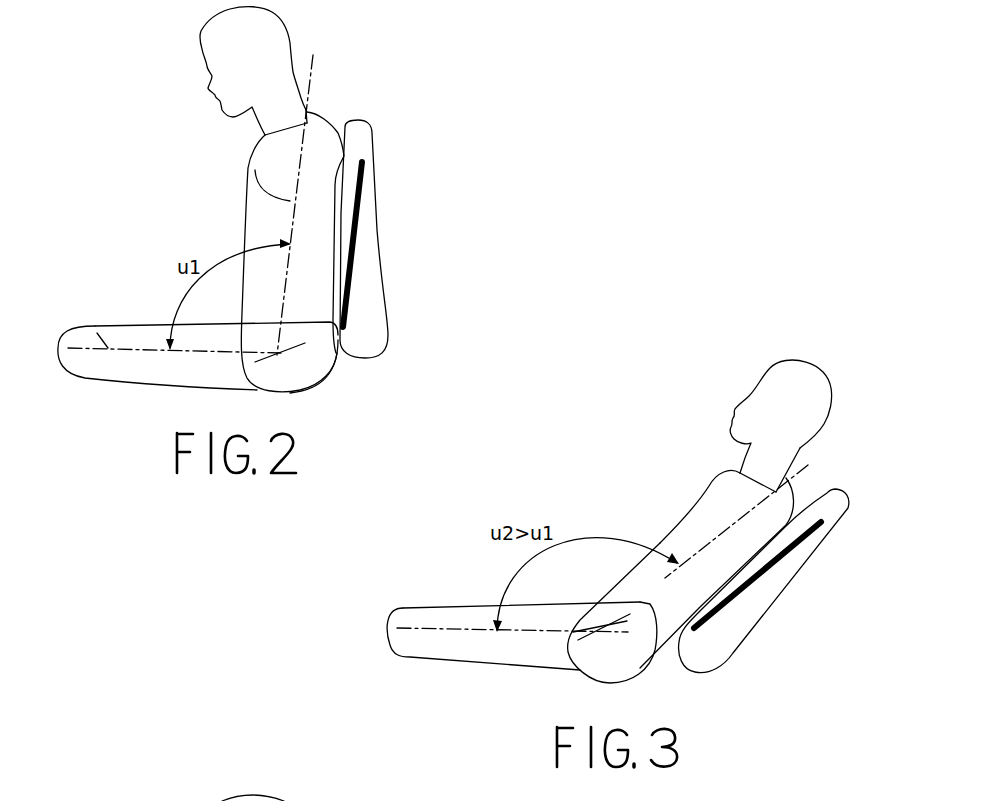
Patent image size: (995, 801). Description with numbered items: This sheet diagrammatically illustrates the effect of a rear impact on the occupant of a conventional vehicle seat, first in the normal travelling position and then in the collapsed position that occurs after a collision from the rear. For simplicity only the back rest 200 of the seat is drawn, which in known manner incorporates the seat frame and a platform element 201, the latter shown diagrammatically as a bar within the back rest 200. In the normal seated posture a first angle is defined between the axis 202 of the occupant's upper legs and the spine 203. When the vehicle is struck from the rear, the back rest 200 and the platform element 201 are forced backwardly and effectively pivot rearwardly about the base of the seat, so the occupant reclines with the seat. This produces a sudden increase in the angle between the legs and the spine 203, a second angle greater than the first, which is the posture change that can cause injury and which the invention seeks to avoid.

In FIG. 2, the back rest 200 is at (372, 147).
In FIG. 3, the back rest 200 is at (838, 490).
In FIG. 2, the platform element 201 is at (356, 239).
In FIG. 3, the platform element 201 is at (772, 558).
In FIG. 2, the axis of the upper legs 202 is at (95, 322).
In FIG. 2, the spine 203 is at (242, 163).